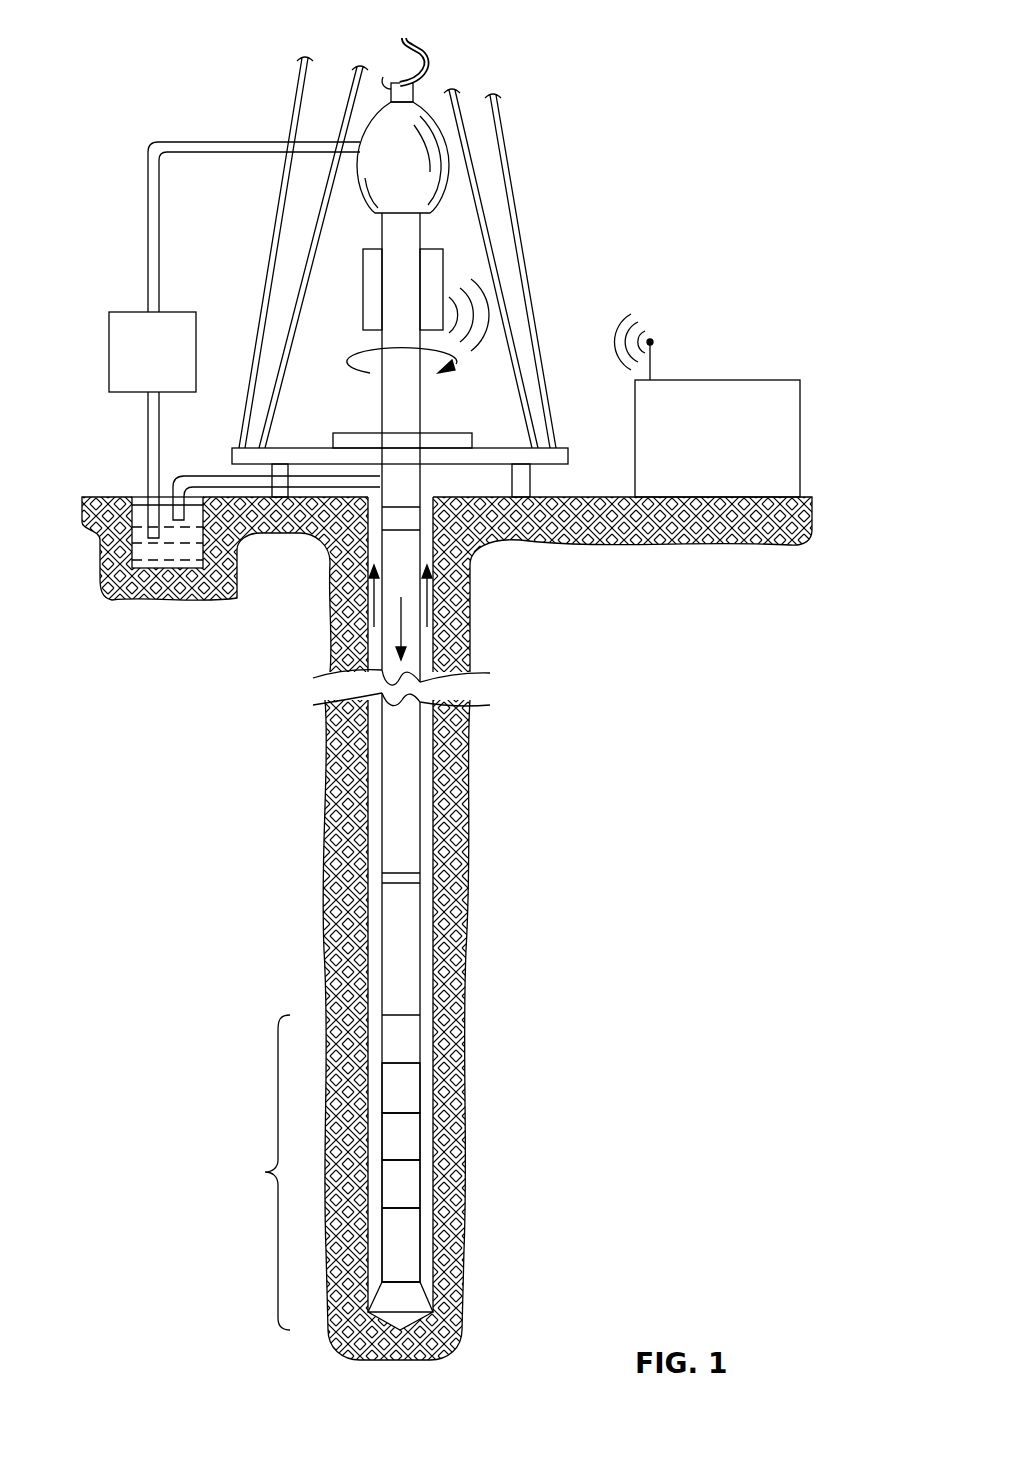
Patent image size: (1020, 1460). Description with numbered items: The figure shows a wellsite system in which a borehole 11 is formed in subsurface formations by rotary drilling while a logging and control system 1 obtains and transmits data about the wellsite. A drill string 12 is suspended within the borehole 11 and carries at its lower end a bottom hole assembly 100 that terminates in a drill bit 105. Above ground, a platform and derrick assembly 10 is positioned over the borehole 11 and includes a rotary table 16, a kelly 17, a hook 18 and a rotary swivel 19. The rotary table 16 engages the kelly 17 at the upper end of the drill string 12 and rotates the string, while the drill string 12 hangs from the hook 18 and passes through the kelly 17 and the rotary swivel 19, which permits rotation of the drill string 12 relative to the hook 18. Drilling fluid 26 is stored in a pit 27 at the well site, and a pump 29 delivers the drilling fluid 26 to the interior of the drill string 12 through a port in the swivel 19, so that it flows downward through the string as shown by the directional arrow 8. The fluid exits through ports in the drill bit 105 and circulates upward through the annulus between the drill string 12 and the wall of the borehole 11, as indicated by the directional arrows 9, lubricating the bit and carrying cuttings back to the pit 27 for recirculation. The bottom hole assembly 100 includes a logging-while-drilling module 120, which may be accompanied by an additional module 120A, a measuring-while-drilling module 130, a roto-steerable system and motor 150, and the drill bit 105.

The logging and control 1 is at (747, 380).
The directional arrow 8 is at (401, 630).
The directional arrows 9 is at (374, 603).
The platform and derrick assembly 10 is at (570, 40).
The borehole 11 is at (428, 495).
The drill string 12 is at (402, 491).
The rotary table 16 is at (458, 433).
The kelly 17 is at (392, 398).
The hook 18 is at (396, 40).
The rotary swivel 19 is at (364, 188).
The drilling fluid 26 is at (168, 572).
The pit 27 is at (134, 487).
The pump 29 is at (128, 396).
The bottom hole assembly 100 is at (266, 1172).
The drill bit 105 is at (403, 1295).
The logging-while-drilling module 120 is at (403, 1090).
The additional logging-while-drilling module 120A is at (403, 1185).
The measuring-while-drilling module 130 is at (403, 1137).
The roto-steerable system and motor 150 is at (403, 1255).